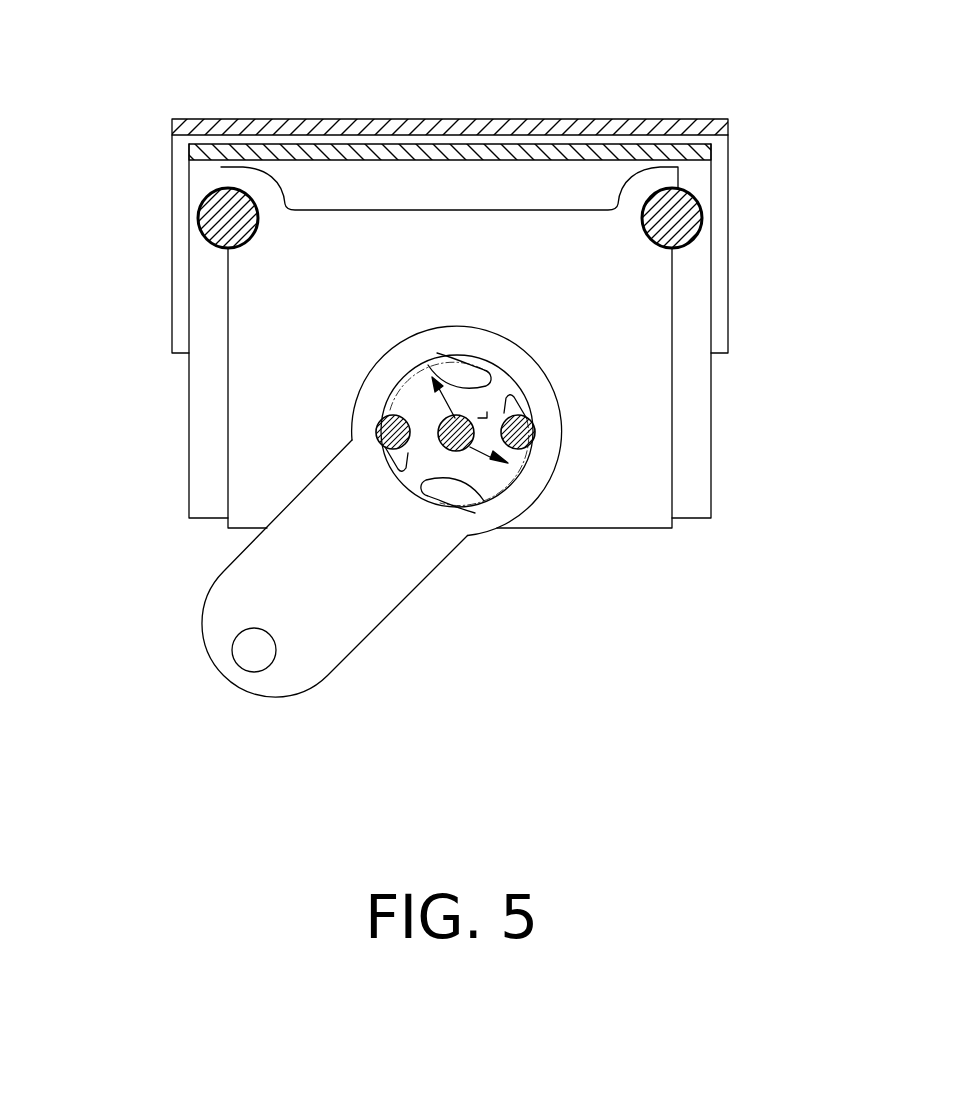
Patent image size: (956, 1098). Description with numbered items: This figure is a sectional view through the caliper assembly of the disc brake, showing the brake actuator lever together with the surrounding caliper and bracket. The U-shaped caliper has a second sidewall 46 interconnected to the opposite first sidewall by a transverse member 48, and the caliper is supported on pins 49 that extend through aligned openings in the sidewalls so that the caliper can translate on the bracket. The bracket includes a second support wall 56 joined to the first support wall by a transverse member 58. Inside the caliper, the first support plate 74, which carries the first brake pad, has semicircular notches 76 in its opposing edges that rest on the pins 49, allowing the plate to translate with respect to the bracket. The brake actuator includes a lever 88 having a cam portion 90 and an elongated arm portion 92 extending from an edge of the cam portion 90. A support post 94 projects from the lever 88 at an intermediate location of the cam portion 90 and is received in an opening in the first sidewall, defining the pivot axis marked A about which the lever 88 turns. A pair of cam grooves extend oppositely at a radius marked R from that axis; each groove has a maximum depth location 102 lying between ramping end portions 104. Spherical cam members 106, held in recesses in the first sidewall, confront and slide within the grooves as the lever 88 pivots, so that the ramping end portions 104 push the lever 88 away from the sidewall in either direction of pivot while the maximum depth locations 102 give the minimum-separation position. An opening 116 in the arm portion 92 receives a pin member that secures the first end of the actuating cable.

The second sidewall 46 is at (205, 470).
The transverse member 48 is at (298, 151).
The pins 49 is at (212, 205).
The second support wall 56 is at (181, 292).
The transverse member 58 is at (207, 119).
The first support plate 74 is at (245, 372).
The semicircular notches 76 is at (645, 233).
The lever 88 is at (333, 628).
The cam portion 90 is at (513, 367).
The arm portion 92 is at (295, 678).
The support post 94 is at (461, 451).
The maximum depth location 102 is at (383, 360).
The ramping end portions 104 is at (453, 358).
The spherical cam members 106 is at (377, 422).
The opening 116 is at (232, 652).